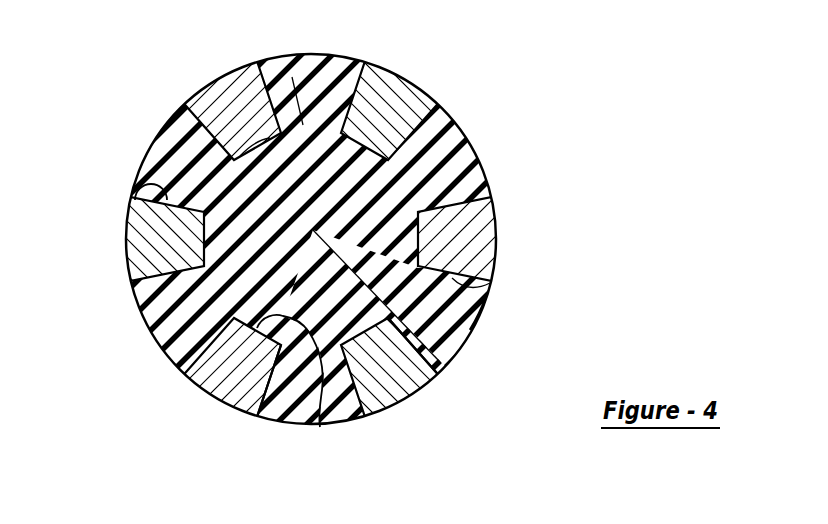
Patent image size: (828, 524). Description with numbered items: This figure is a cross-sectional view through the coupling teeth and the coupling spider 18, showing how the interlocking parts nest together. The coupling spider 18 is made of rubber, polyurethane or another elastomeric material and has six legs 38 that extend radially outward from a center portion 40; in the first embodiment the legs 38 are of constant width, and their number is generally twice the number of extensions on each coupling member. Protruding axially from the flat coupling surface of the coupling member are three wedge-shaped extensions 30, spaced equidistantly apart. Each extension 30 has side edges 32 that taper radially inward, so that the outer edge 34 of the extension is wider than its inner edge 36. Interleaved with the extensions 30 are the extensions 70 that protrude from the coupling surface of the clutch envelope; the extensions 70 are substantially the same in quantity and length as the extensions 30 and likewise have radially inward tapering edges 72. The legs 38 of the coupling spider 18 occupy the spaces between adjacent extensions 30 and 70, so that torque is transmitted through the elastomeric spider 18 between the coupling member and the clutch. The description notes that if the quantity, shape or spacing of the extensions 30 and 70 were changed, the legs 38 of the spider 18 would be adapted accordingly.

The coupling spider 18 is at (292, 113).
The extension 30 is at (240, 112).
The side edge 32 is at (483, 308).
The outer edge 34 is at (243, 412).
The inner edge 36 is at (320, 427).
The leg 38 is at (325, 80).
The center portion 40 is at (440, 370).
The extension 70 is at (390, 113).
The radially inward tapering edge 72 is at (148, 176).